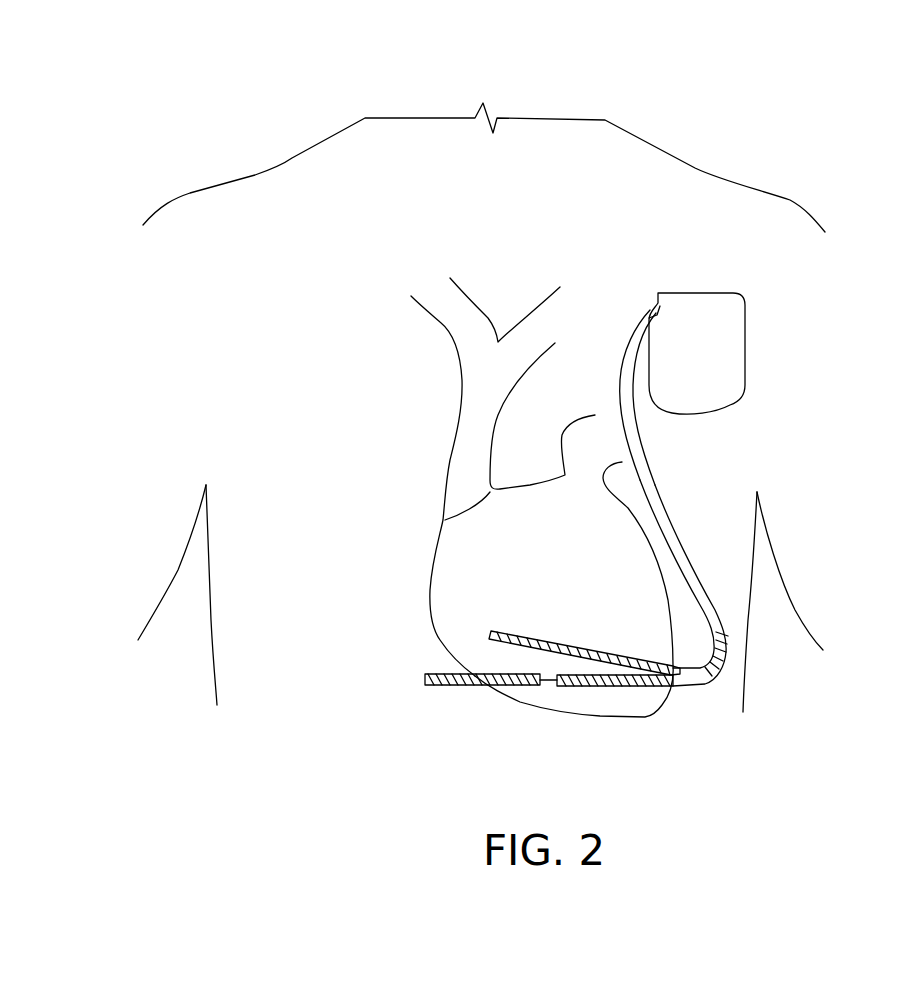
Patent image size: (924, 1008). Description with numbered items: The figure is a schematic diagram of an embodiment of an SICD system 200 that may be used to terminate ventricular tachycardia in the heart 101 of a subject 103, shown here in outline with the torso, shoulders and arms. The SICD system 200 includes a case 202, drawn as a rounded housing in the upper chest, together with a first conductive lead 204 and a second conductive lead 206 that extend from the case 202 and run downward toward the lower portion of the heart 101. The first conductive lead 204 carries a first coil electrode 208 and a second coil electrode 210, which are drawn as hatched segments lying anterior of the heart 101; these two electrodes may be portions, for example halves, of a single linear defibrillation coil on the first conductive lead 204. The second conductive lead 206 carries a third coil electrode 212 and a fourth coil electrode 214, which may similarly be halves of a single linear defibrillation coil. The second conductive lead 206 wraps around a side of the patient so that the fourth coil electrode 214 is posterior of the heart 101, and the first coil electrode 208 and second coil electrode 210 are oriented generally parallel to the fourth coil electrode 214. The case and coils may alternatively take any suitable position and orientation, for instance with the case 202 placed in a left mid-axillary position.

The SICD system 200 is at (800, 121).
The subject 103 is at (695, 167).
The heart 101 is at (442, 324).
The case 202 is at (695, 294).
The first conductive lead 204 is at (622, 358).
The second conductive lead 206 is at (680, 512).
The first coil electrode 208 is at (597, 688).
The second coil electrode 210 is at (513, 688).
The third coil electrode 212 is at (725, 661).
The fourth coil electrode 214 is at (585, 663).